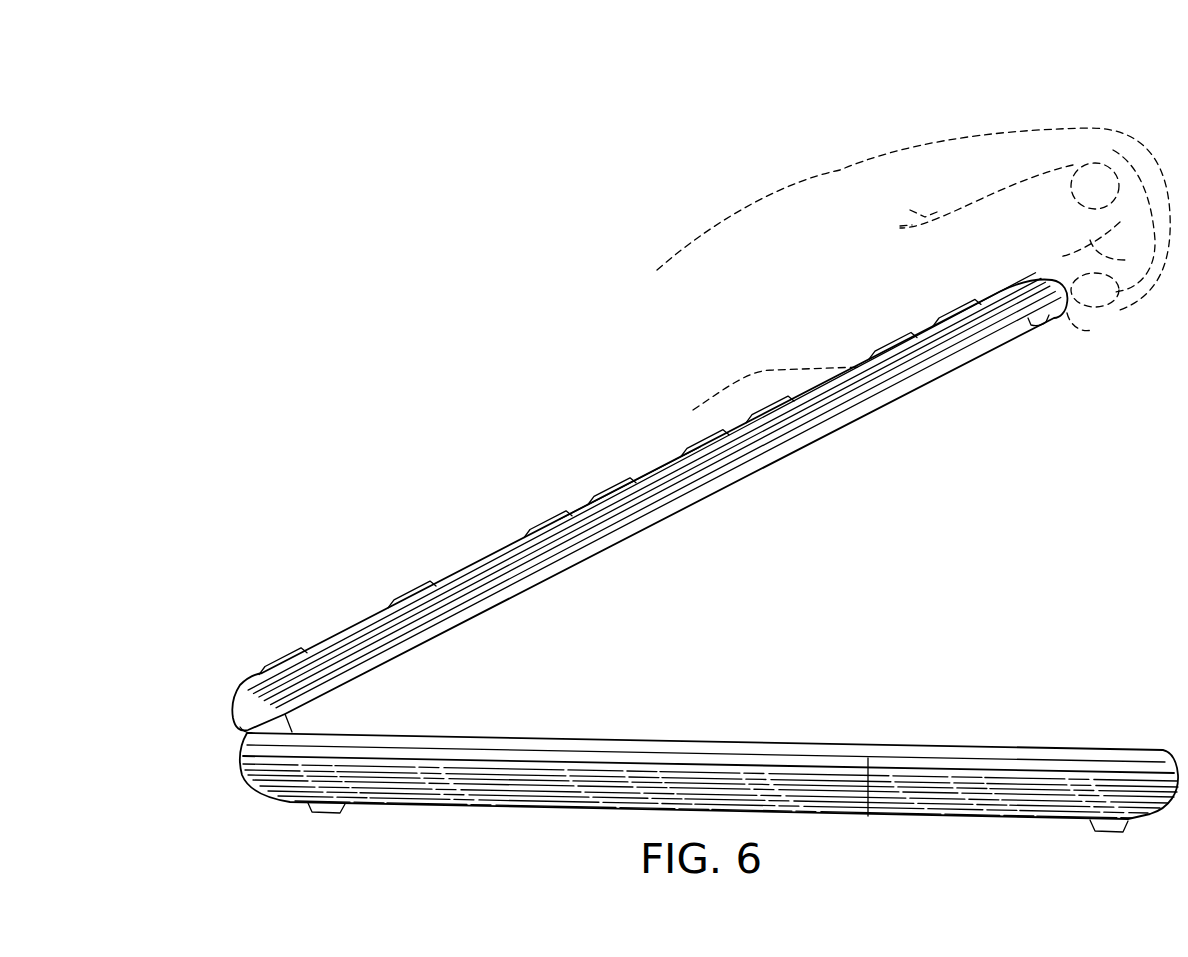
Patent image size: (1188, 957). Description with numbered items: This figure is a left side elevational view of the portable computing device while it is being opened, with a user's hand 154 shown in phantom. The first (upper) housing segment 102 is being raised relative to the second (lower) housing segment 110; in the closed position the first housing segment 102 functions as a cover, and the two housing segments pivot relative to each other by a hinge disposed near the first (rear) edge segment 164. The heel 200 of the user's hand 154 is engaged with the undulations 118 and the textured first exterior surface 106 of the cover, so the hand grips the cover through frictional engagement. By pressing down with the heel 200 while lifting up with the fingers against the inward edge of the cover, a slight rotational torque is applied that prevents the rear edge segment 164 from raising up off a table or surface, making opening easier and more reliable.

The first (upper) housing segment 102 is at (377, 563).
The first (upper) exterior surface 106 is at (645, 478).
The second (lower) housing segment 110 is at (357, 843).
The undulations 118 is at (580, 500).
The user's hand 154 is at (1005, 135).
The first (rear) edge segment 164 is at (207, 757).
The heel 200 is at (825, 360).